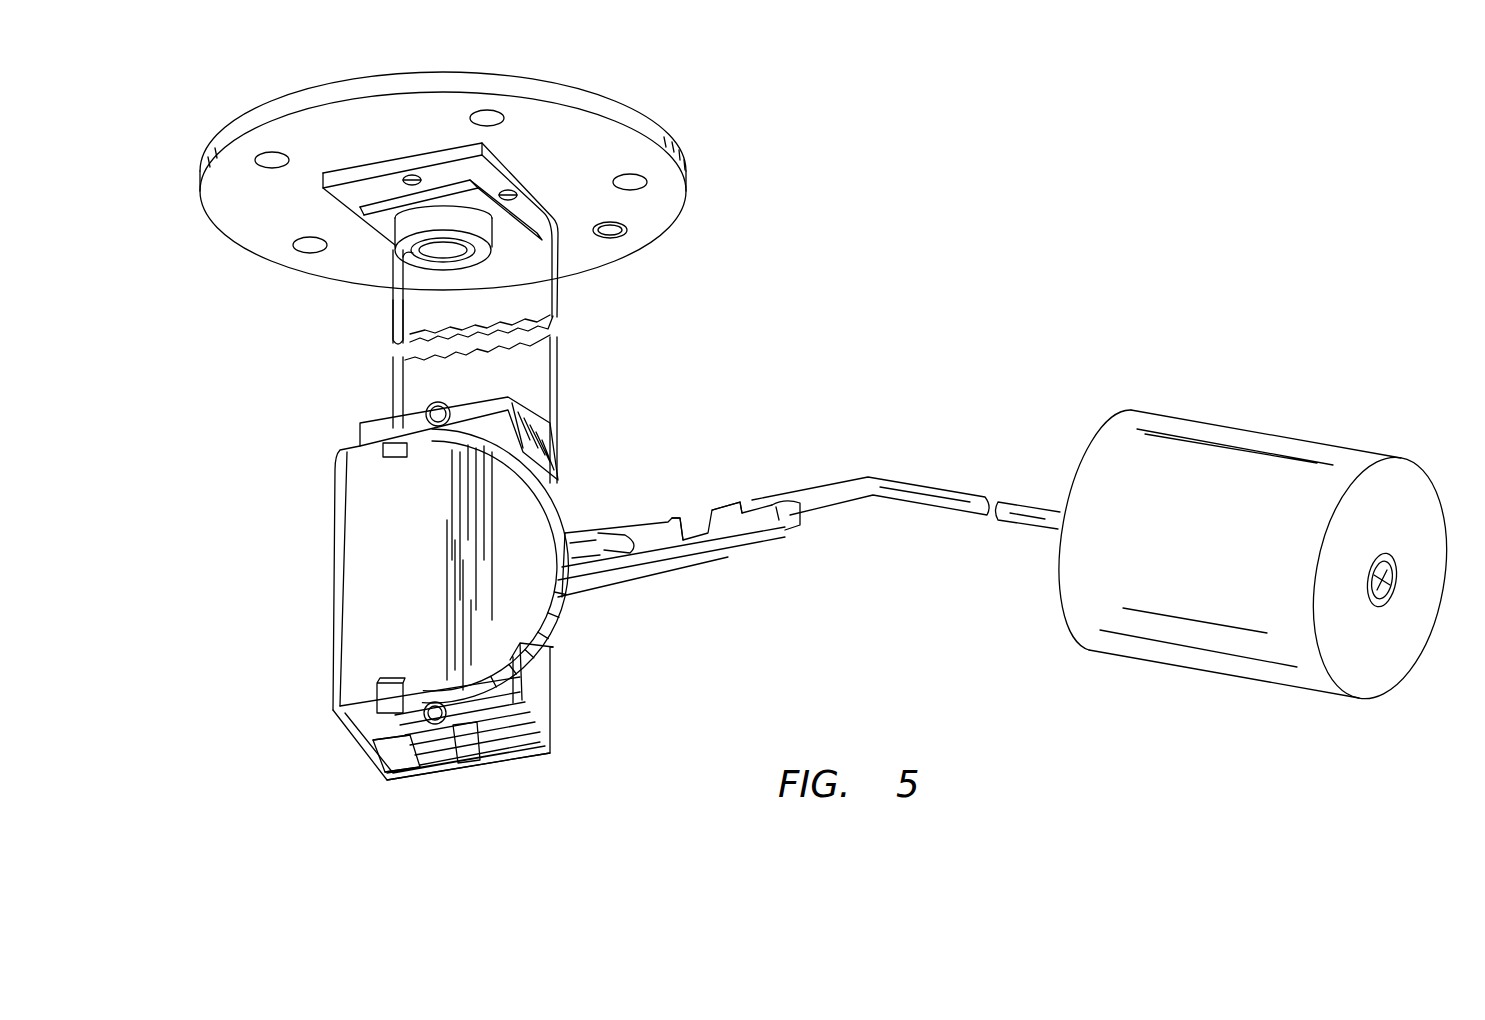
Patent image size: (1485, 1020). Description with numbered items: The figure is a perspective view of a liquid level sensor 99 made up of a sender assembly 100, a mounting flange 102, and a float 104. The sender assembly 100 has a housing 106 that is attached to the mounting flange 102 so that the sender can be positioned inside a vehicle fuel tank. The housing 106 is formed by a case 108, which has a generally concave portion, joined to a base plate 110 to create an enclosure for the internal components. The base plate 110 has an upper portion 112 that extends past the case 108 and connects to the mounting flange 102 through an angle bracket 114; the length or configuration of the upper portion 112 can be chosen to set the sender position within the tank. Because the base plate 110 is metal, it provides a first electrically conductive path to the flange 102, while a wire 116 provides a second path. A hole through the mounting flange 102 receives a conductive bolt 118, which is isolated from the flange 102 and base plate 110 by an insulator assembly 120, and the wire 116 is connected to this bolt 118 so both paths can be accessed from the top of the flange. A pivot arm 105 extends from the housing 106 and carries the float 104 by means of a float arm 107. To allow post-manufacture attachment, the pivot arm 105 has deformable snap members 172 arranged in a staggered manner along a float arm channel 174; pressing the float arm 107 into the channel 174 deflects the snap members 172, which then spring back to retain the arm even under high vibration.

The liquid level sensor 99 is at (846, 267).
The sender assembly 100 is at (652, 697).
The mounting flange 102 is at (648, 255).
The float 104 is at (1200, 643).
The pivot arm 105 is at (718, 565).
The housing 106 is at (304, 706).
The float arm 107 is at (915, 482).
The case 108 is at (366, 740).
The base plate 110 is at (440, 780).
The upper portion 112 is at (555, 370).
The angle bracket 114 is at (383, 192).
The wire 116 is at (392, 326).
The conductive bolt 118 is at (436, 259).
The insulator assembly 120 is at (505, 236).
The snap members 172 is at (730, 500).
The float arm channel 174 is at (800, 517).